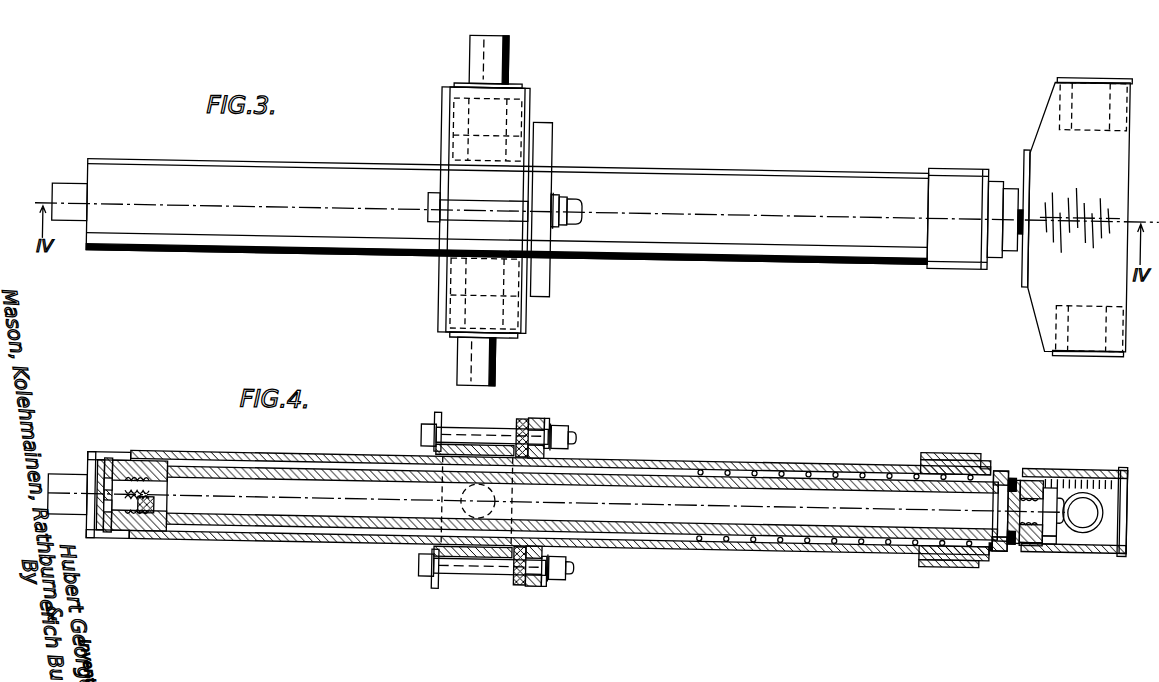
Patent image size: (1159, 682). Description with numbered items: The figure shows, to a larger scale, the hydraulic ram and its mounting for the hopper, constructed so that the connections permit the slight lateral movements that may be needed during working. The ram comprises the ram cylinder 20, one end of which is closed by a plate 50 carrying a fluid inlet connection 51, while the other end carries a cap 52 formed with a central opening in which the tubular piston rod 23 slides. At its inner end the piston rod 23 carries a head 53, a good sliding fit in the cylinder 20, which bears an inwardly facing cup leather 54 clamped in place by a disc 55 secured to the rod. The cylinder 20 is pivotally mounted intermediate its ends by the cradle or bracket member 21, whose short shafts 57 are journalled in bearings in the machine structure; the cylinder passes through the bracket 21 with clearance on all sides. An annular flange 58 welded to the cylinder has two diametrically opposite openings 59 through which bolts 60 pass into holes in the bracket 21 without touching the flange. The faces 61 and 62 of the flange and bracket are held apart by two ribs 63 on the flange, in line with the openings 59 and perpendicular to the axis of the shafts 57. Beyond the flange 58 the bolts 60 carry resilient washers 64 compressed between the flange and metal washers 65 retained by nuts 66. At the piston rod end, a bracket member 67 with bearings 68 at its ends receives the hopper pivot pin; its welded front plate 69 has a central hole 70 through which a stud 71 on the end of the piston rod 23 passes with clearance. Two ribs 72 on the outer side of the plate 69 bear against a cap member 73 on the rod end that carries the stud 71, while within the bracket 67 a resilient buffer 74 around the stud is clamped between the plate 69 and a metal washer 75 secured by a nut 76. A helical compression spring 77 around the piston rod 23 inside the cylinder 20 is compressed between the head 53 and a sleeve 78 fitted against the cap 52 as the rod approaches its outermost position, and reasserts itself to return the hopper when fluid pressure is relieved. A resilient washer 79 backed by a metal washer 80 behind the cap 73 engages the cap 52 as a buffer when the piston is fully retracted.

In FIG. 3, the ram cylinder 20 is at (762, 165).
In FIG. 4, the ram cylinder 20 is at (768, 451).
In FIG. 3, the cradle or bracket member 21 is at (442, 146).
In FIG. 4, the cradle or bracket member 21 is at (433, 411).
In FIG. 4, the tubular piston rod 23 is at (655, 468).
In FIG. 4, the plate 50 is at (98, 452).
In FIG. 3, the fluid inlet connection 51 is at (82, 186).
In FIG. 4, the fluid inlet connection 51 is at (80, 484).
In FIG. 3, the cap 52 is at (957, 162).
In FIG. 4, the cap 52 is at (952, 444).
In FIG. 4, the head 53 is at (150, 466).
In FIG. 4, the cup leather 54 is at (115, 458).
In FIG. 4, the disc 55 is at (104, 532).
In FIG. 3, the short shafts 57 is at (495, 50).
In FIG. 3, the annular flange 58 is at (540, 276).
In FIG. 4, the annular flange 58 is at (548, 412).
In FIG. 4, the openings 59 is at (520, 425).
In FIG. 3, the bolts 60 is at (503, 201).
In FIG. 4, the bolts 60 is at (463, 424).
In FIG. 4, the face of the flange 61 is at (532, 412).
In FIG. 4, the face of the bracket 62 is at (512, 582).
In FIG. 3, the ribs 63 is at (535, 201).
In FIG. 4, the ribs 63 is at (525, 411).
In FIG. 3, the resilient washers 64 is at (553, 219).
In FIG. 4, the resilient washers 64 is at (552, 422).
In FIG. 3, the metal washers 65 is at (562, 190).
In FIG. 4, the metal washers 65 is at (160, 532).
In FIG. 3, the nuts 66 is at (575, 215).
In FIG. 4, the nuts 66 is at (575, 431).
In FIG. 3, the bracket member 67 is at (1038, 128).
In FIG. 4, the bracket member 67 is at (1092, 534).
In FIG. 3, the bearings 68 is at (1088, 62).
In FIG. 4, the bearings 68 is at (1122, 450).
In FIG. 3, the front plate 69 is at (1025, 254).
In FIG. 4, the front plate 69 is at (1014, 463).
In FIG. 4, the central hole 70 is at (1027, 530).
In FIG. 4, the stud 71 is at (1042, 528).
In FIG. 3, the ribs 72 is at (1024, 200).
In FIG. 4, the ribs 72 is at (1010, 461).
In FIG. 3, the cap member 73 is at (1015, 170).
In FIG. 4, the cap member 73 is at (997, 454).
In FIG. 4, the resilient washer or buffer 74 is at (1035, 467).
In FIG. 4, the metal washer 75 is at (1052, 482).
In FIG. 4, the nut 76 is at (1088, 476).
In FIG. 4, the helical compression spring 77 is at (815, 458).
In FIG. 4, the sleeve 78 is at (925, 440).
In FIG. 4, the resilient washer 79 is at (991, 533).
In FIG. 4, the metal washer 80 is at (1000, 530).